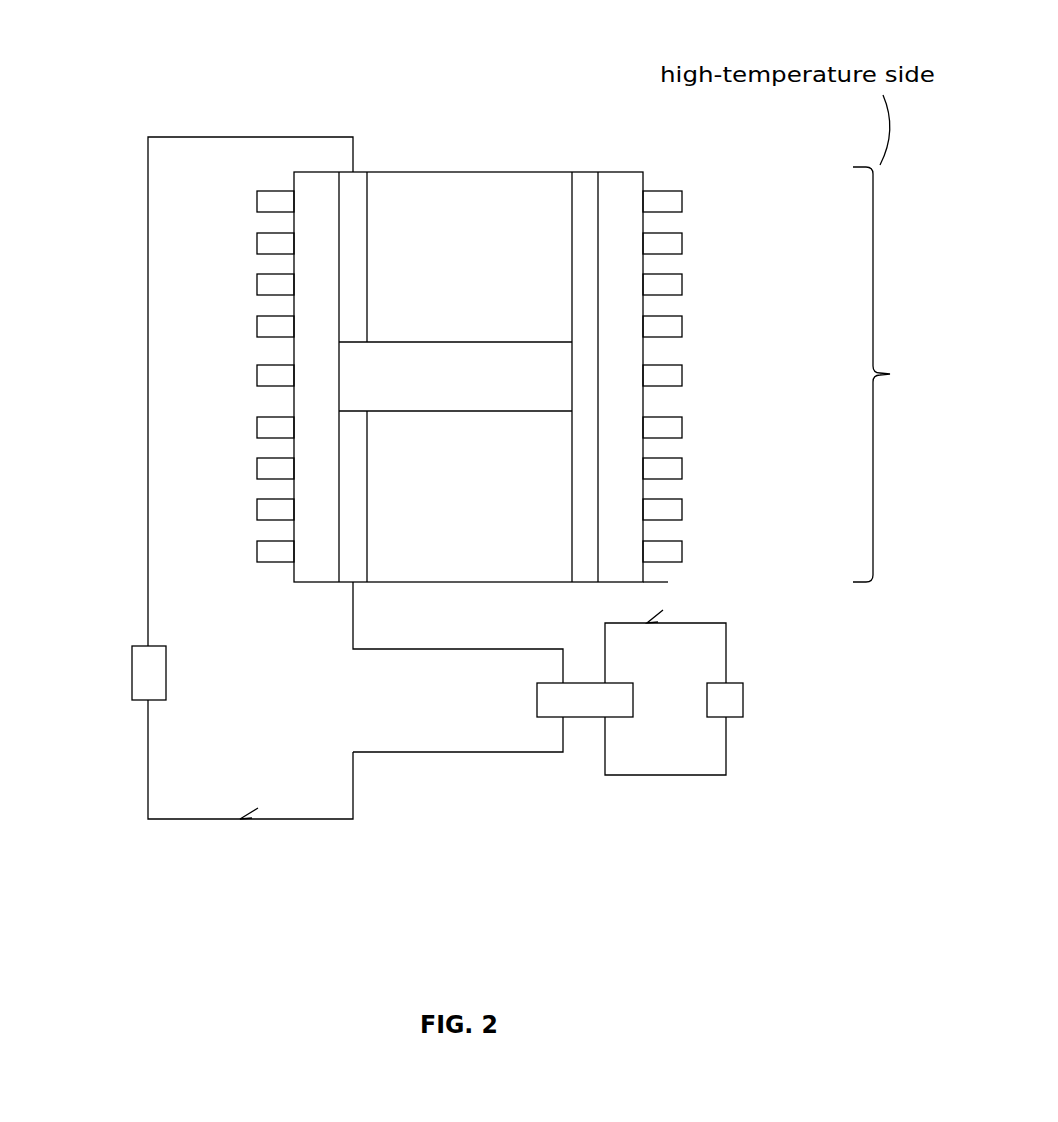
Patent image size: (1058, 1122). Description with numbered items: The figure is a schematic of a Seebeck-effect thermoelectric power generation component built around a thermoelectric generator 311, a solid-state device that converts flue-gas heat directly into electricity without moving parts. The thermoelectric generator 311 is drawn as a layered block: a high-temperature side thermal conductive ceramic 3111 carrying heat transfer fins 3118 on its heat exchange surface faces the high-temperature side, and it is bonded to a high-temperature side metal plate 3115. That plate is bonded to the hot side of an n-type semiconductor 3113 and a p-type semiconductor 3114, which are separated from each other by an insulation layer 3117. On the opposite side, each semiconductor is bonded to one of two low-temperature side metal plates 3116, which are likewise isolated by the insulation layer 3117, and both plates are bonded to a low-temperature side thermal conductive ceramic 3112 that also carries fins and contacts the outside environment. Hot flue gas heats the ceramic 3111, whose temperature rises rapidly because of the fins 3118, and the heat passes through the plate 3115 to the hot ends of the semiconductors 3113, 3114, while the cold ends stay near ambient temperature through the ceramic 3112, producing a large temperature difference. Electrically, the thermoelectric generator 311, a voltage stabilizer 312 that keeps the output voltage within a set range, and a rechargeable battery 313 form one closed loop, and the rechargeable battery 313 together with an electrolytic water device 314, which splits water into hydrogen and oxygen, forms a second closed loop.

The thermoelectric generator 311 is at (502, 195).
The high-temperature side thermal conductive ceramic 3111 is at (623, 268).
The low-temperature side thermal conductive ceramic 3112 is at (315, 253).
The n-type semiconductor 3113 is at (445, 198).
The p-type semiconductor 3114 is at (532, 468).
The high-temperature side metal plate 3115 is at (583, 318).
The low-temperature side metal plate 3116 is at (348, 302).
The insulation layer 3117 is at (548, 375).
The heat transfer fins 3118 is at (662, 202).
The voltage stabilizer 312 is at (143, 667).
The rechargeable battery 313 is at (581, 700).
The electrolytic water device 314 is at (728, 697).